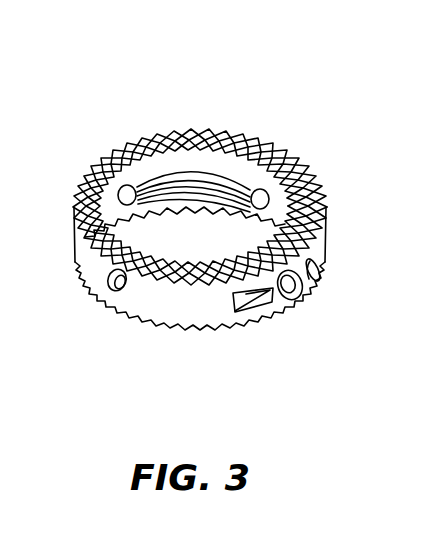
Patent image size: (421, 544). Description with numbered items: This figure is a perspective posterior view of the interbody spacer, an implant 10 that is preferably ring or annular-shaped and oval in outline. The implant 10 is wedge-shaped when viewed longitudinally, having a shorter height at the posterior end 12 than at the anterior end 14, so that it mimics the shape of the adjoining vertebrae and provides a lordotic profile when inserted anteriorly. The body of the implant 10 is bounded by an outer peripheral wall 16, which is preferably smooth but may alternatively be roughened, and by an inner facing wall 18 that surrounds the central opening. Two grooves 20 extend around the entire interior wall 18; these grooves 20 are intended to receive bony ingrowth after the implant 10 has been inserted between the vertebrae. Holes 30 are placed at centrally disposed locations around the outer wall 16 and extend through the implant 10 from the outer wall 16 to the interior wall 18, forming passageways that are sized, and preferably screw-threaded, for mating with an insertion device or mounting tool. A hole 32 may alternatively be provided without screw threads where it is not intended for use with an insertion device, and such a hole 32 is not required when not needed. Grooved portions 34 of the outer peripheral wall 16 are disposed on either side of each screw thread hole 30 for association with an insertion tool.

The implant 10 is at (274, 86).
The posterior end 12 is at (86, 283).
The anterior end 14 is at (311, 161).
The outer peripheral wall 16 is at (200, 333).
The inner facing wall 18 is at (257, 176).
The grooves 20 is at (192, 174).
The holes 30 is at (303, 288).
The hole 32 is at (123, 299).
The grooved portions 34 is at (320, 265).